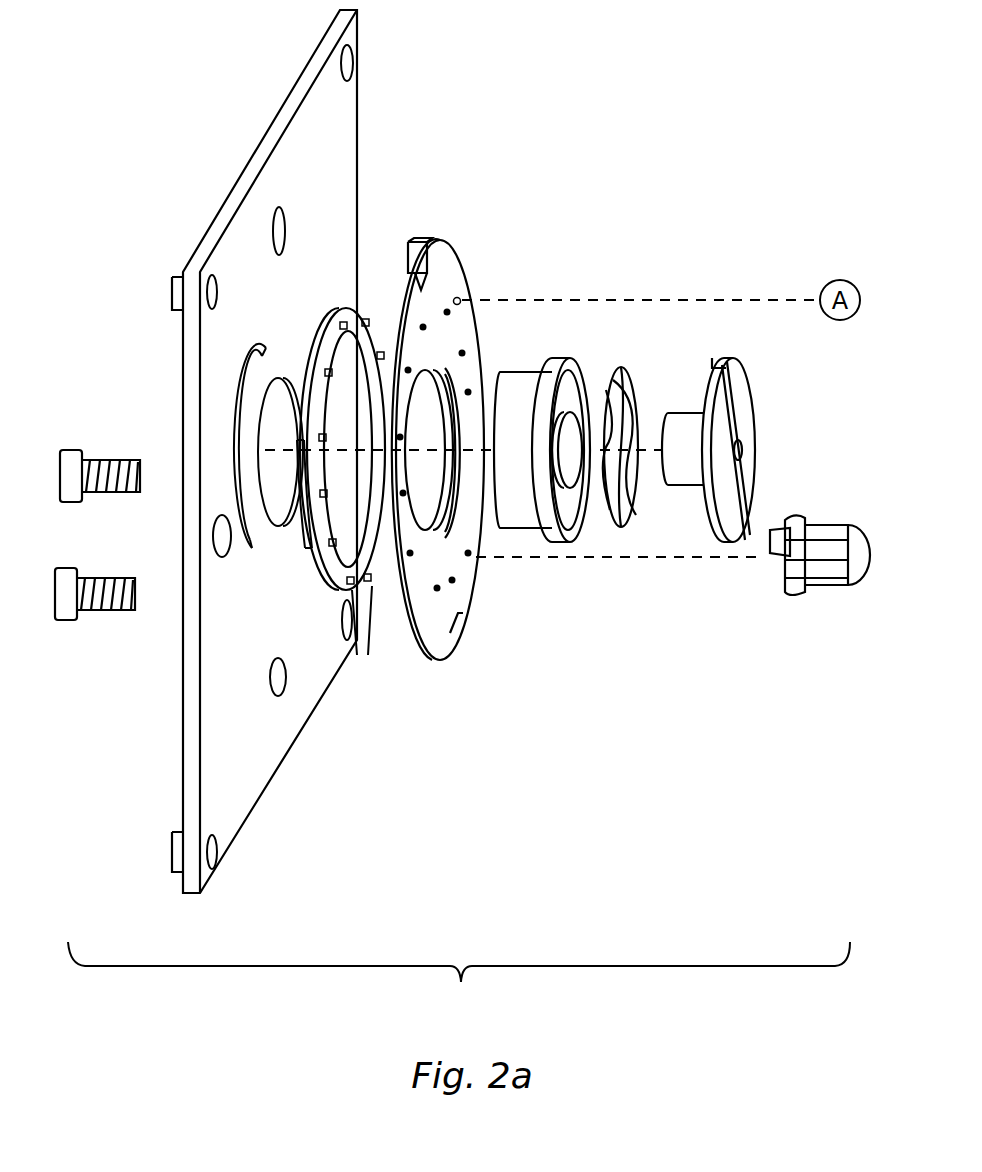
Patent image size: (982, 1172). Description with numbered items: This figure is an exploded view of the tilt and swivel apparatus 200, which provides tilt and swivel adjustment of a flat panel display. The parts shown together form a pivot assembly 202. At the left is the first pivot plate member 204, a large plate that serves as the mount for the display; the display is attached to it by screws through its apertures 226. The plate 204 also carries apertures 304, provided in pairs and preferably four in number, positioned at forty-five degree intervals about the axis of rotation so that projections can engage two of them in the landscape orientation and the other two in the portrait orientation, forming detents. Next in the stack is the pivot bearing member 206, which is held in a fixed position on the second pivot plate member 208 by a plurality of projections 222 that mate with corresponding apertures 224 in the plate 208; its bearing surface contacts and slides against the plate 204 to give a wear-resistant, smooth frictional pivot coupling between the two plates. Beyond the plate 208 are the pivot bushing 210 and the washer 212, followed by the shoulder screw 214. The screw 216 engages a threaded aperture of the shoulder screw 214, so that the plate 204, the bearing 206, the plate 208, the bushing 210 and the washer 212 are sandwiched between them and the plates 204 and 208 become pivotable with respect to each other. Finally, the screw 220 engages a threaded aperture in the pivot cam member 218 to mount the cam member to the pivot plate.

The tilt and swivel apparatus 200 is at (663, 271).
The pivot assembly 202 is at (459, 980).
The first pivot plate member 204 is at (238, 193).
The pivot bearing member 206 is at (342, 300).
The second pivot plate member 208 is at (452, 246).
The pivot bushing 210 is at (565, 358).
The washer 212 is at (634, 385).
The shoulder screw 214 is at (742, 372).
The screw 216 is at (100, 462).
The pivot cam member 218 is at (812, 526).
The screw 220 is at (96, 580).
The projections 222 is at (368, 637).
The apertures 224 is at (452, 583).
The apertures 226 is at (354, 62).
The apertures 304 is at (280, 210).